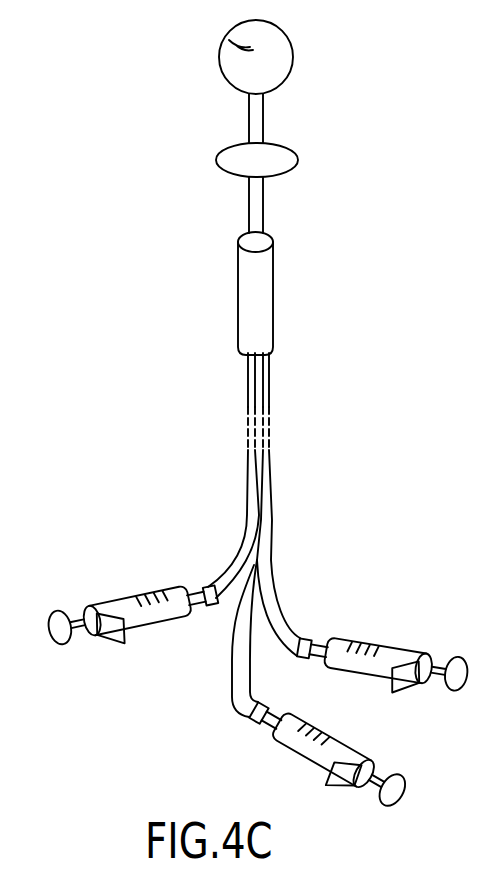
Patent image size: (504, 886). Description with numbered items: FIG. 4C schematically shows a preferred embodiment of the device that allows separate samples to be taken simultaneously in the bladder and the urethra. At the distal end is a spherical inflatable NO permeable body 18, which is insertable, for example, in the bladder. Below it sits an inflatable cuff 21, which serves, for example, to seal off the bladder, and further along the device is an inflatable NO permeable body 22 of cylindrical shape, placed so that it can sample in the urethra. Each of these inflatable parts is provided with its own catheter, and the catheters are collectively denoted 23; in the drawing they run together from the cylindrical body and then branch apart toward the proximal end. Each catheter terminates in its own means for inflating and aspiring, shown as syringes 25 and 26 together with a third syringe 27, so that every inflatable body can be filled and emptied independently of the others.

The spherical inflatable NO permeable body 18 is at (220, 64).
The inflatable cuff 21 is at (218, 153).
The inflatable NO permeable body of cylindrical shape 22 is at (238, 303).
The catheters 23 is at (248, 383).
The syringe 25 is at (130, 598).
The syringe 26 is at (302, 762).
The syringe 27 is at (405, 646).